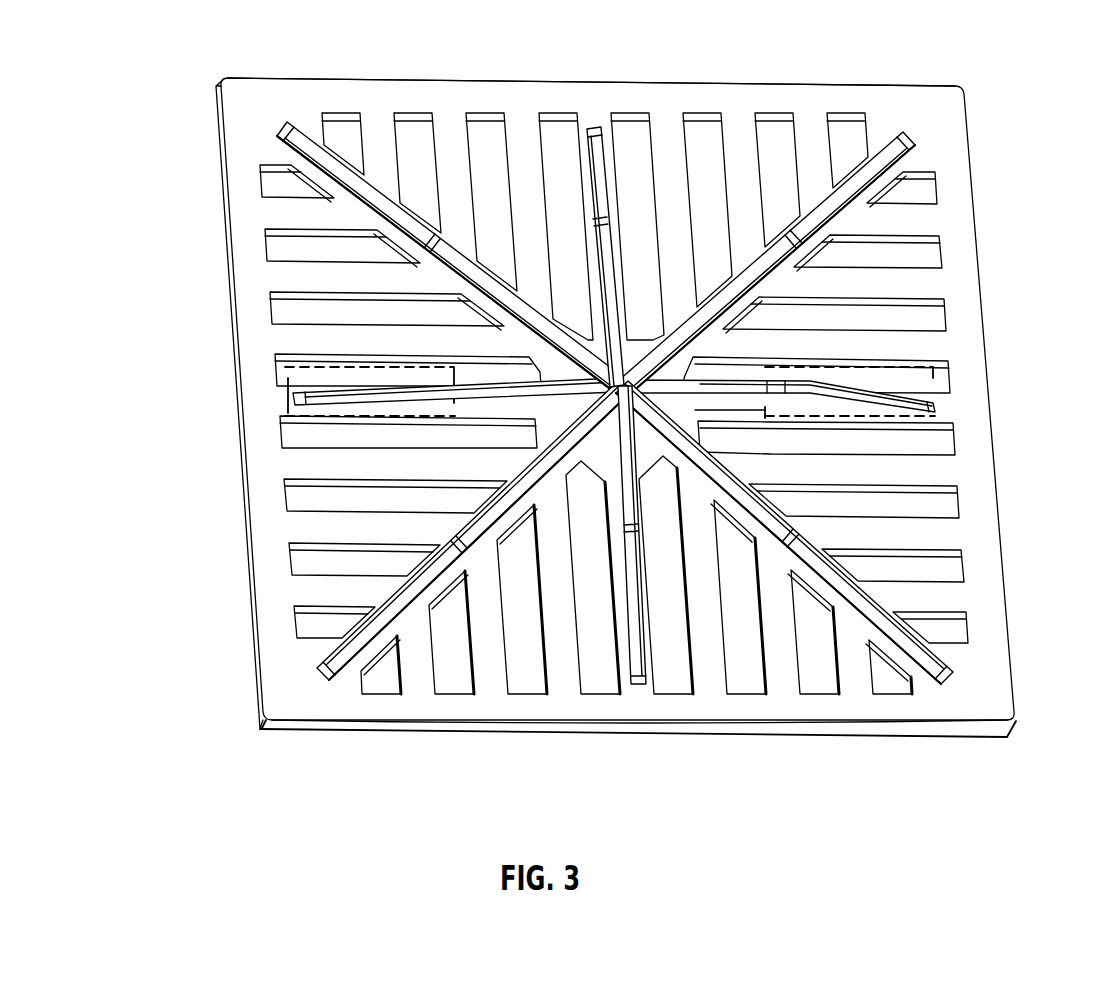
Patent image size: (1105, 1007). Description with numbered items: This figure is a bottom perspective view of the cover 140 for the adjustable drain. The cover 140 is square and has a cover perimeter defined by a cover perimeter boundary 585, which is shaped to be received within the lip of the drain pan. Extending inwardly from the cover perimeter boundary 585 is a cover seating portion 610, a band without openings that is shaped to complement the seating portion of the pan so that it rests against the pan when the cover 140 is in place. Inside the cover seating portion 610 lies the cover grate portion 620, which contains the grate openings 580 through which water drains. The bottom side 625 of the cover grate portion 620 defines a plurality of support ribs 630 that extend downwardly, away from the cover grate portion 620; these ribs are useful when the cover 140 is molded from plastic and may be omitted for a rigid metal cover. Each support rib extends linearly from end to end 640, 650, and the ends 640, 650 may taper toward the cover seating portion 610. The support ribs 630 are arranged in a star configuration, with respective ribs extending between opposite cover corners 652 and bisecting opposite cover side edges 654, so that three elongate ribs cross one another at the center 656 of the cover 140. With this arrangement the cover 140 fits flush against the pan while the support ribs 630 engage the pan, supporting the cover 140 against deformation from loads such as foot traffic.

The cover 140 is at (235, 112).
The grate openings 580 is at (420, 135).
The cover perimeter boundary 585 is at (243, 365).
The cover seating portion 610 is at (278, 613).
The cover grate portion 620 is at (490, 680).
The bottom side 625 is at (937, 103).
The support ribs 630 is at (747, 385).
The end 640 is at (938, 402).
The end 650 is at (260, 425).
The cover corners 652 is at (247, 78).
The cover side edges 654 is at (655, 83).
The center 656 is at (628, 345).